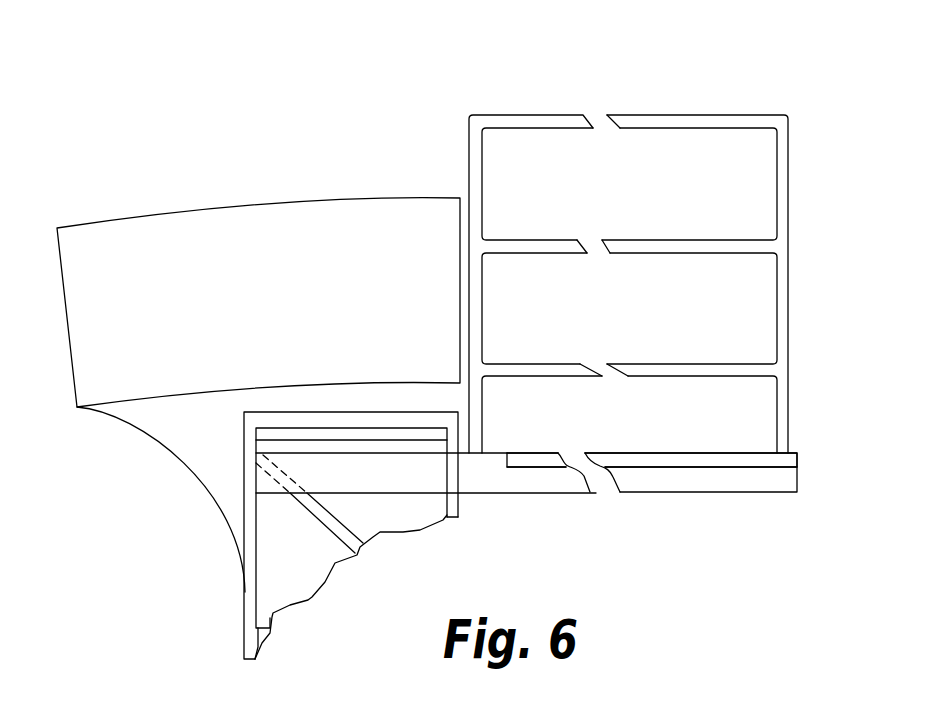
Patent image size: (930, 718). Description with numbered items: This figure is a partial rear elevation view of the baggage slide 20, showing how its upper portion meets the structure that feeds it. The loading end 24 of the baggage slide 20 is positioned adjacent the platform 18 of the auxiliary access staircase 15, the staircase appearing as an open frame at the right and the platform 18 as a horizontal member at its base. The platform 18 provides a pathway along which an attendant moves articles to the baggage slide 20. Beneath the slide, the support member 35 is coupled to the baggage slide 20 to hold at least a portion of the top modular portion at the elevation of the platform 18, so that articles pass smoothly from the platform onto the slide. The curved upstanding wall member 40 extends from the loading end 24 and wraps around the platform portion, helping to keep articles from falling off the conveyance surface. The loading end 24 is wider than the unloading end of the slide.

The baggage slide 20 is at (151, 106).
The loading end 24 is at (121, 265).
The upstanding wall member 40 is at (118, 372).
The support member 35 is at (510, 478).
The platform 18 is at (740, 452).
The auxiliary access staircase 15 is at (782, 208).